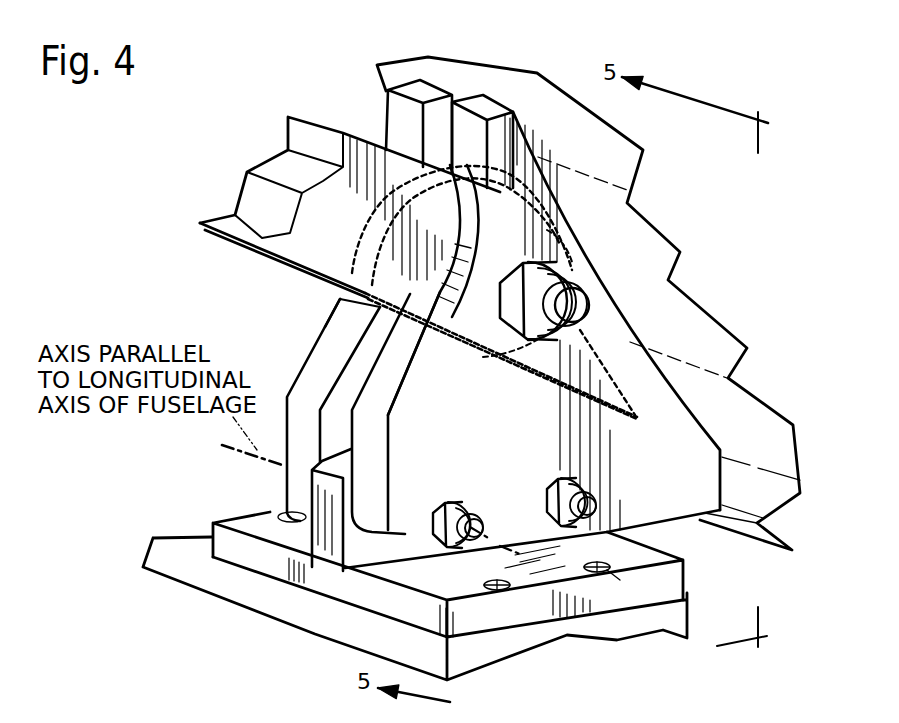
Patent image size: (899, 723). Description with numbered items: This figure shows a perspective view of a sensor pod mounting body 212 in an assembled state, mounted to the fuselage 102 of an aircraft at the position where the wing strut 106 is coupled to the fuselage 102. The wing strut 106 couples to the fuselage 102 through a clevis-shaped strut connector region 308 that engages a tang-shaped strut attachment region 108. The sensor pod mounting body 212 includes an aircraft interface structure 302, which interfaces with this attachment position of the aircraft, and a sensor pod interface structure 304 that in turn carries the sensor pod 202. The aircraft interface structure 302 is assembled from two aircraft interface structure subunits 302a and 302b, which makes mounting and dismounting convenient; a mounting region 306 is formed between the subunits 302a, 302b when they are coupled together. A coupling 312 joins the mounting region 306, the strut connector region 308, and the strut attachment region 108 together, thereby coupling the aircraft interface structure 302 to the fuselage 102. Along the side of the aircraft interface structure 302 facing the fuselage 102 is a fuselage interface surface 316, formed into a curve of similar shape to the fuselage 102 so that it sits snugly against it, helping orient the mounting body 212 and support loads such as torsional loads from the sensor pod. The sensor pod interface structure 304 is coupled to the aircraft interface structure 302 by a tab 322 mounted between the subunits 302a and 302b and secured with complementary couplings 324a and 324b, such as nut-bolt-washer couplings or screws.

The fuselage 102 is at (689, 334).
The wing strut 106 is at (343, 232).
The strut attachment region 108 is at (630, 397).
The sensor pod 202 is at (358, 631).
The sensor pod mounting body 212 is at (152, 148).
The aircraft interface structure 302 is at (537, 135).
The aircraft interface structure subunit 302a is at (320, 357).
The aircraft interface structure subunit 302b is at (483, 399).
The sensor pod interface structure 304 is at (263, 557).
The mounting region 306 is at (327, 313).
The strut connector region 308 is at (590, 253).
The coupling 312 is at (600, 303).
The fuselage interface surface 316 is at (570, 222).
The tab 322 is at (322, 505).
The coupling 324a is at (453, 490).
The coupling 324b is at (545, 480).